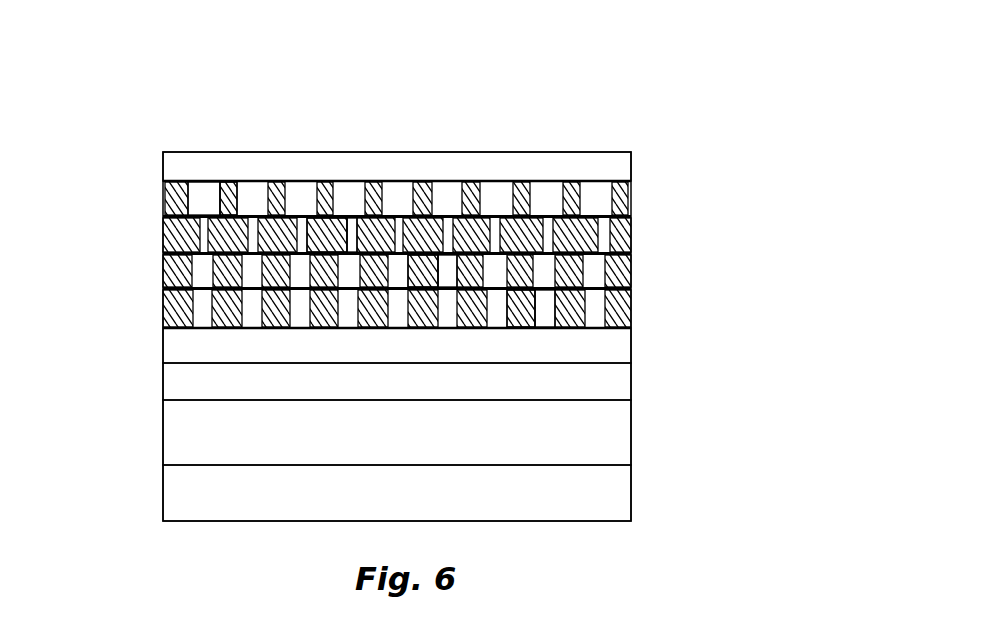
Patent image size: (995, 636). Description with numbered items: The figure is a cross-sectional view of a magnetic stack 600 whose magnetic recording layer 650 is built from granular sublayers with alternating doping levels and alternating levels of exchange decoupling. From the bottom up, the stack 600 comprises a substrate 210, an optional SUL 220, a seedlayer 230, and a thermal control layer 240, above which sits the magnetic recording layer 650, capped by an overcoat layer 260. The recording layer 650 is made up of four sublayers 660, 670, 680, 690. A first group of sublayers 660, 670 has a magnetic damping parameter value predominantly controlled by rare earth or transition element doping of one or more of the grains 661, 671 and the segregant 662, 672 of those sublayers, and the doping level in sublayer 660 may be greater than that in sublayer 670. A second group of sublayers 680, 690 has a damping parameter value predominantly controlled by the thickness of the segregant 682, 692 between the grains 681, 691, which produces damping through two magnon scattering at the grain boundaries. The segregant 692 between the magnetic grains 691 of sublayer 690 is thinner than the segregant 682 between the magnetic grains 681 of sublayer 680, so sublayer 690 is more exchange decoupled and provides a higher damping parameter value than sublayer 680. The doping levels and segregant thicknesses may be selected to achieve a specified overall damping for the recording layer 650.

The magnetic stack 600 is at (127, 123).
The substrate 210 is at (631, 497).
The SUL 220 is at (631, 423).
The seedlayer 230 is at (632, 365).
The thermal control layer 240 is at (632, 335).
The overcoat layer 260 is at (632, 163).
The magnetic recording layer 650 is at (400, 212).
The sublayer 660 is at (163, 305).
The grains 661 is at (517, 302).
The segregant 662 is at (545, 302).
The sublayer 670 is at (163, 260).
The grains 671 is at (436, 252).
The segregant 672 is at (450, 263).
The sublayer 680 is at (163, 229).
The magnetic grains 681 is at (325, 215).
The segregant 682 is at (350, 228).
The sublayer 690 is at (163, 185).
The magnetic grains 691 is at (230, 190).
The segregant 692 is at (210, 193).